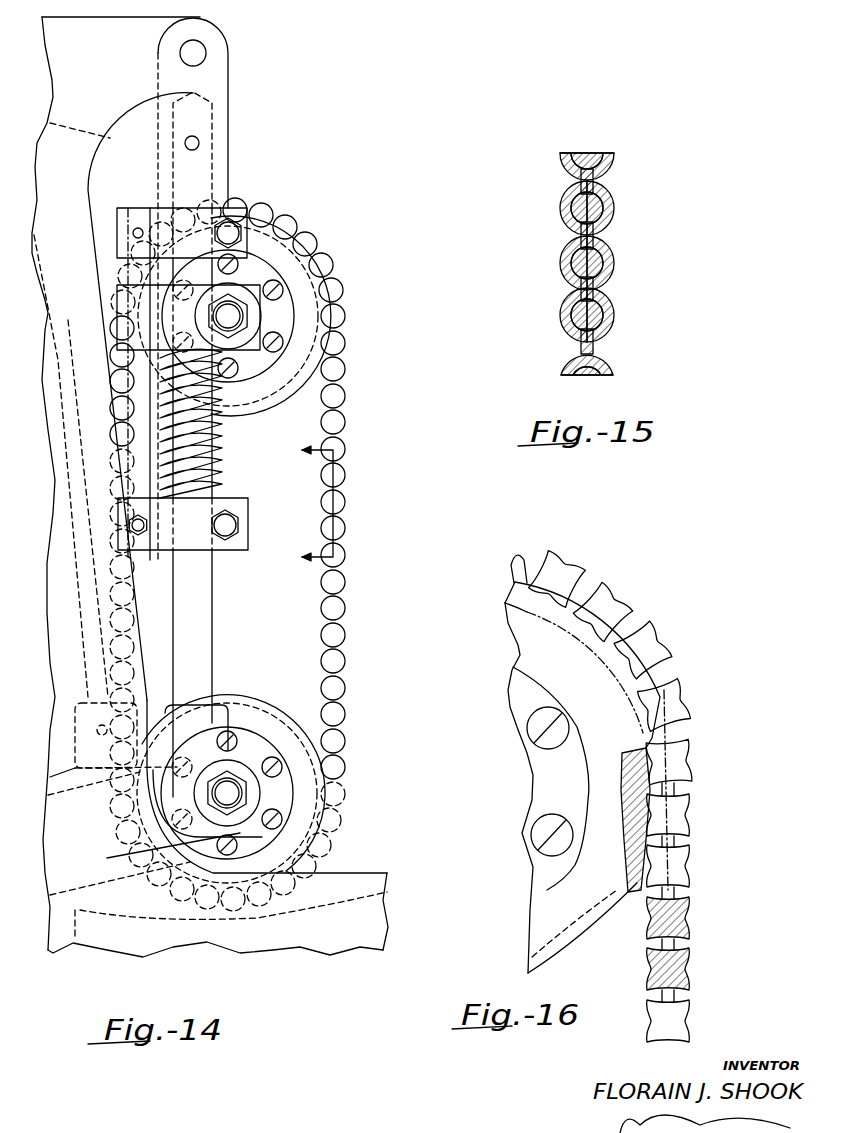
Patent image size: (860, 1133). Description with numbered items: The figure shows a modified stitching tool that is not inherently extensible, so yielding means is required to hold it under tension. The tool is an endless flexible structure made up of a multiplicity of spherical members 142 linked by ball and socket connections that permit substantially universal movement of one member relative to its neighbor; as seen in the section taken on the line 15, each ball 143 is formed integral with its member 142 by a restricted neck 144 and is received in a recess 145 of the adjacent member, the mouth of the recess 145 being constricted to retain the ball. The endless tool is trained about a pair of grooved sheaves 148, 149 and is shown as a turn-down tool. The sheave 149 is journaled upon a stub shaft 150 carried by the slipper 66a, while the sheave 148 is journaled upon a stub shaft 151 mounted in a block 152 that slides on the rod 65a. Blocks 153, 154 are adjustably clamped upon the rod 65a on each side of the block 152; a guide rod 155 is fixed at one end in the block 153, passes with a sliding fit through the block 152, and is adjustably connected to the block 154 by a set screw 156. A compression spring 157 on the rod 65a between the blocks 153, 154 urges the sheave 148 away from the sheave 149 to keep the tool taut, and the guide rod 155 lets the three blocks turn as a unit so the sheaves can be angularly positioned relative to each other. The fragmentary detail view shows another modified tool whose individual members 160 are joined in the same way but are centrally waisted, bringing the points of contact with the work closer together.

In FIG. 14, the spherical members 142 is at (345, 423).
In FIG. 15, the spherical members 142 is at (613, 212).
In FIG. 15, the ball 143 is at (607, 265).
In FIG. 15, the restricted neck 144 is at (597, 238).
In FIG. 15, the recess 145 is at (575, 228).
In FIG. 14, the grooved sheave 148 is at (303, 344).
In FIG. 16, the grooved sheave 148 is at (540, 904).
In FIG. 14, the grooved sheave 149 is at (250, 710).
In FIG. 14, the stub shaft 150 is at (232, 793).
In FIG. 14, the stub shaft 151 is at (232, 316).
In FIG. 14, the block 152 is at (243, 290).
In FIG. 14, the block 153 is at (247, 240).
In FIG. 14, the block 154 is at (250, 533).
In FIG. 14, the guide rod 155 is at (136, 433).
In FIG. 14, the set screw 156 is at (136, 552).
In FIG. 14, the compression spring 157 is at (222, 462).
In FIG. 16, the individual members 160 is at (640, 652).
In FIG. 14, the rod 65a is at (200, 627).
In FIG. 14, the slipper 66a is at (237, 786).
In FIG. 14, the section line 15 is at (313, 506).